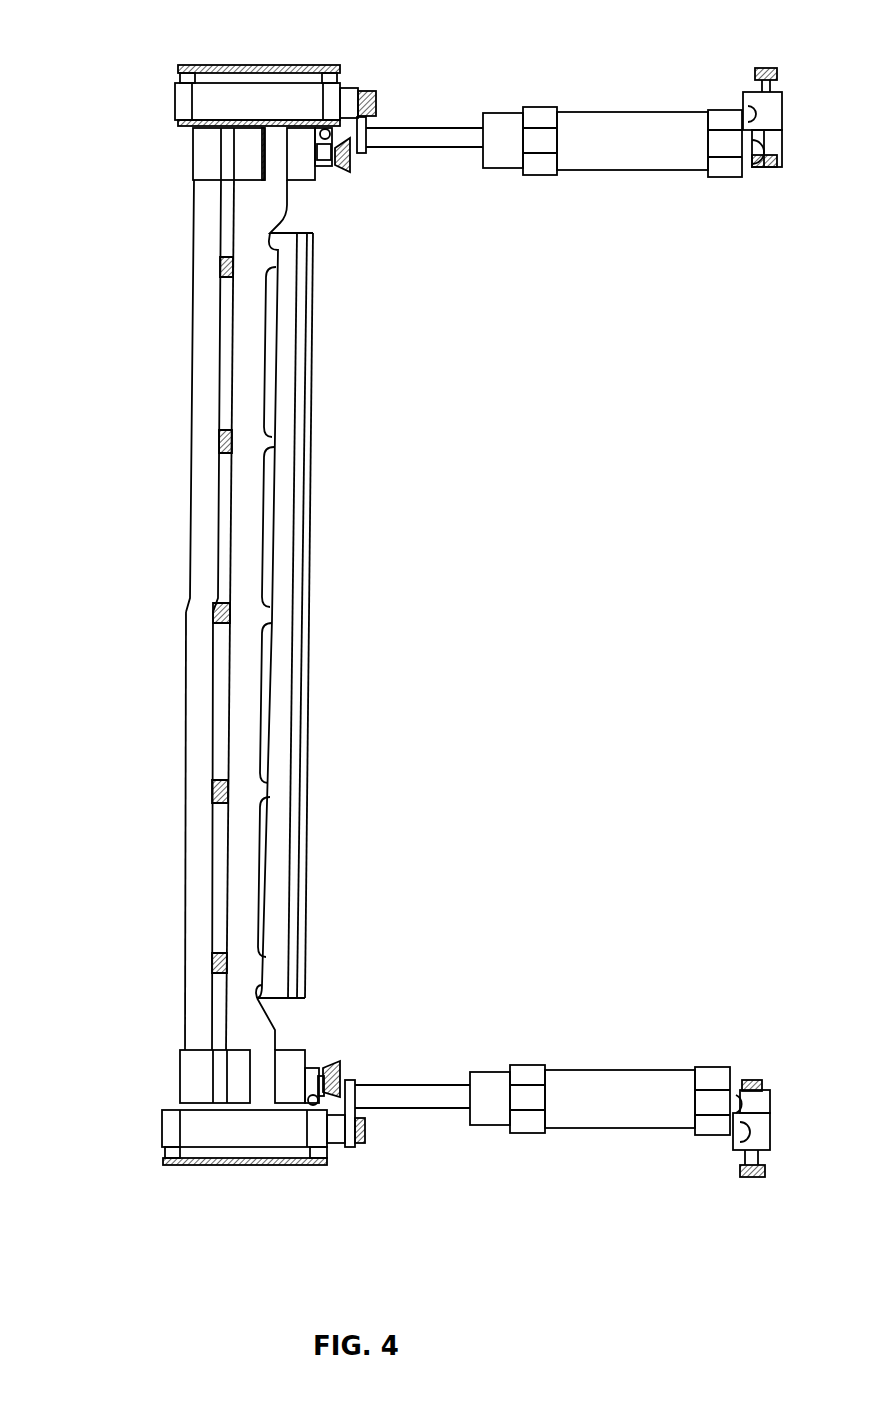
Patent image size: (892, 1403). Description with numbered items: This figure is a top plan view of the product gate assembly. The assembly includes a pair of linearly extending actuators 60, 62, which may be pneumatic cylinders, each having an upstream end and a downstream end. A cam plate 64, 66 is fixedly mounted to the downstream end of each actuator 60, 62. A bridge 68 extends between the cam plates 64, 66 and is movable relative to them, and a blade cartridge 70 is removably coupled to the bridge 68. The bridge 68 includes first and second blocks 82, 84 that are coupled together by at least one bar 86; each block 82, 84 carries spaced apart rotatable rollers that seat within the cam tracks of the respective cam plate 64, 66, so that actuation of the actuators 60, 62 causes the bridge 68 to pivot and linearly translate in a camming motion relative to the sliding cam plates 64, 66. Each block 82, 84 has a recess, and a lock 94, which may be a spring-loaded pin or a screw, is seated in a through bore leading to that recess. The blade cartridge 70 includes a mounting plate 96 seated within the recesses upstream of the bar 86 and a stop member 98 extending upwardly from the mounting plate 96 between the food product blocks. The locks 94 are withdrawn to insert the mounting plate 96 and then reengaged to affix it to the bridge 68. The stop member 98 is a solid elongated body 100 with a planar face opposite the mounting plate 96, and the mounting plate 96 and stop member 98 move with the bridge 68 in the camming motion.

The actuator 60 is at (630, 134).
The actuator 62 is at (633, 1102).
The cam plate 64 is at (244, 102).
The cam plate 66 is at (250, 1130).
The bridge 68 is at (190, 372).
The blade cartridge 70 is at (309, 580).
The first block 82 is at (200, 158).
The second block 84 is at (192, 1072).
The bar 86 is at (190, 752).
The lock 94 is at (338, 165).
The mounting plate 96 is at (243, 597).
The stop member 98 is at (296, 812).
The solid elongated body 100 is at (286, 430).